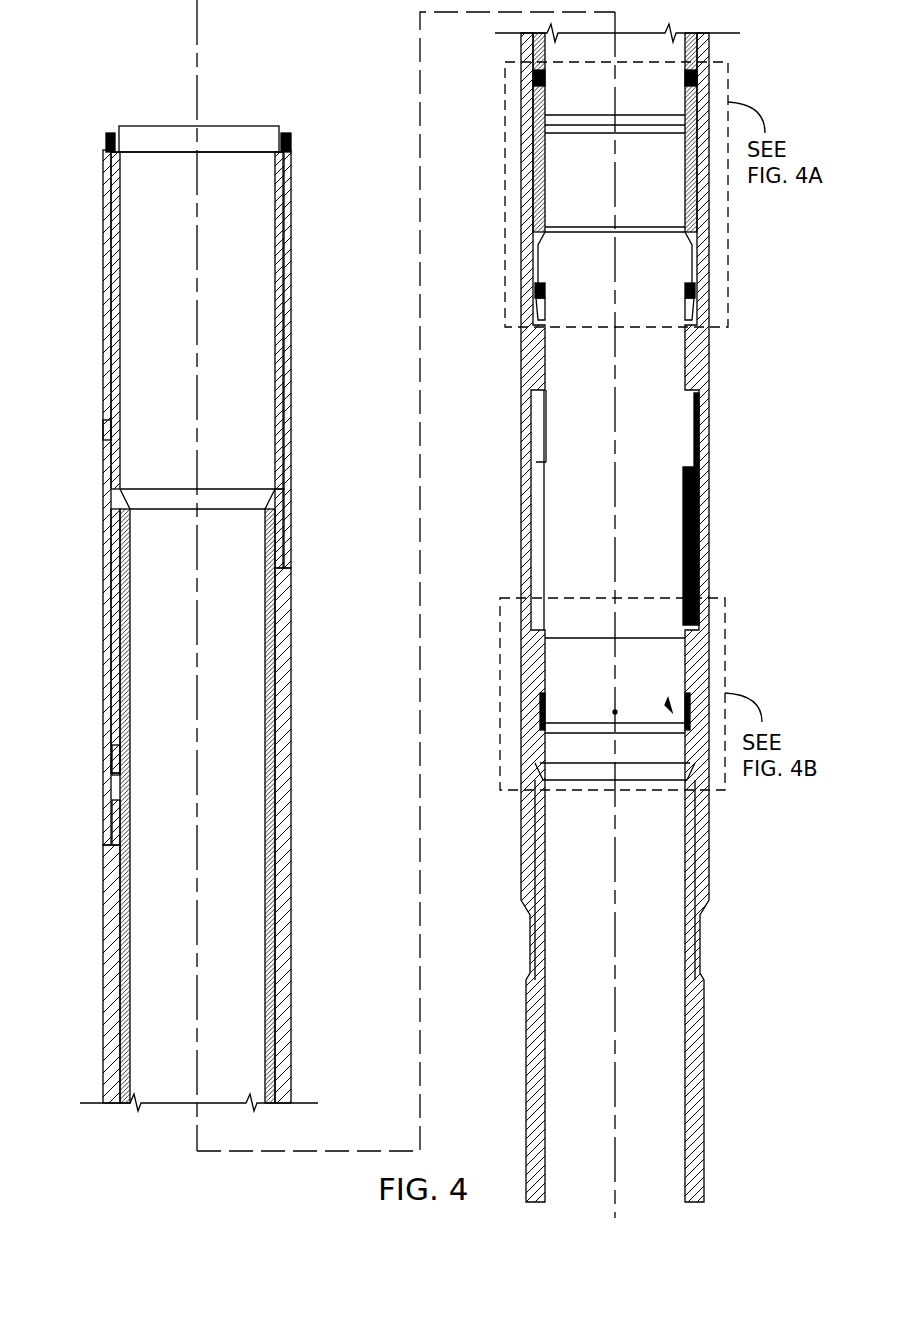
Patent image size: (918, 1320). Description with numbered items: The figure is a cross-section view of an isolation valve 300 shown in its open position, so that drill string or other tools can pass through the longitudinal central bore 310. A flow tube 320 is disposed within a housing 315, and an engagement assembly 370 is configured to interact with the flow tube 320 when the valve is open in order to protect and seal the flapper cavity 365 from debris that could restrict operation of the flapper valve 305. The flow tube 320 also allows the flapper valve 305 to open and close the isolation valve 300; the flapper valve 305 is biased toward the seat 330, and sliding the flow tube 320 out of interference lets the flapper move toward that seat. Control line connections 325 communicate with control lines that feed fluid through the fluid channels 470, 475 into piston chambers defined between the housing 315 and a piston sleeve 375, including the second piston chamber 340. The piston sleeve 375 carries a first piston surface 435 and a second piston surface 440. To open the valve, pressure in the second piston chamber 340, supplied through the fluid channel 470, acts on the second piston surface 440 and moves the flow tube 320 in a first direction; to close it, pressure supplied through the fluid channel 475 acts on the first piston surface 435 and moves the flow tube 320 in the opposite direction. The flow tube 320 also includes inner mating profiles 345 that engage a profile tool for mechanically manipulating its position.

The isolation valve 300 is at (66, 153).
The flapper valve 305 is at (709, 540).
The longitudinal central bore 310 is at (155, 330).
The housing 315 is at (110, 245).
The flow tube 320 is at (709, 232).
The control line connections 325 is at (105, 143).
The seat 330 is at (522, 485).
The second piston chamber 340 is at (118, 668).
The inner mating profiles 345 is at (647, 229).
The flapper cavity 365 is at (535, 545).
The engagement assembly 370 is at (668, 700).
The piston sleeve 375 is at (116, 810).
The first piston surface 435 is at (118, 845).
The second piston surface 440 is at (118, 760).
The fluid channel 470 is at (290, 372).
The fluid channel 475 is at (104, 430).